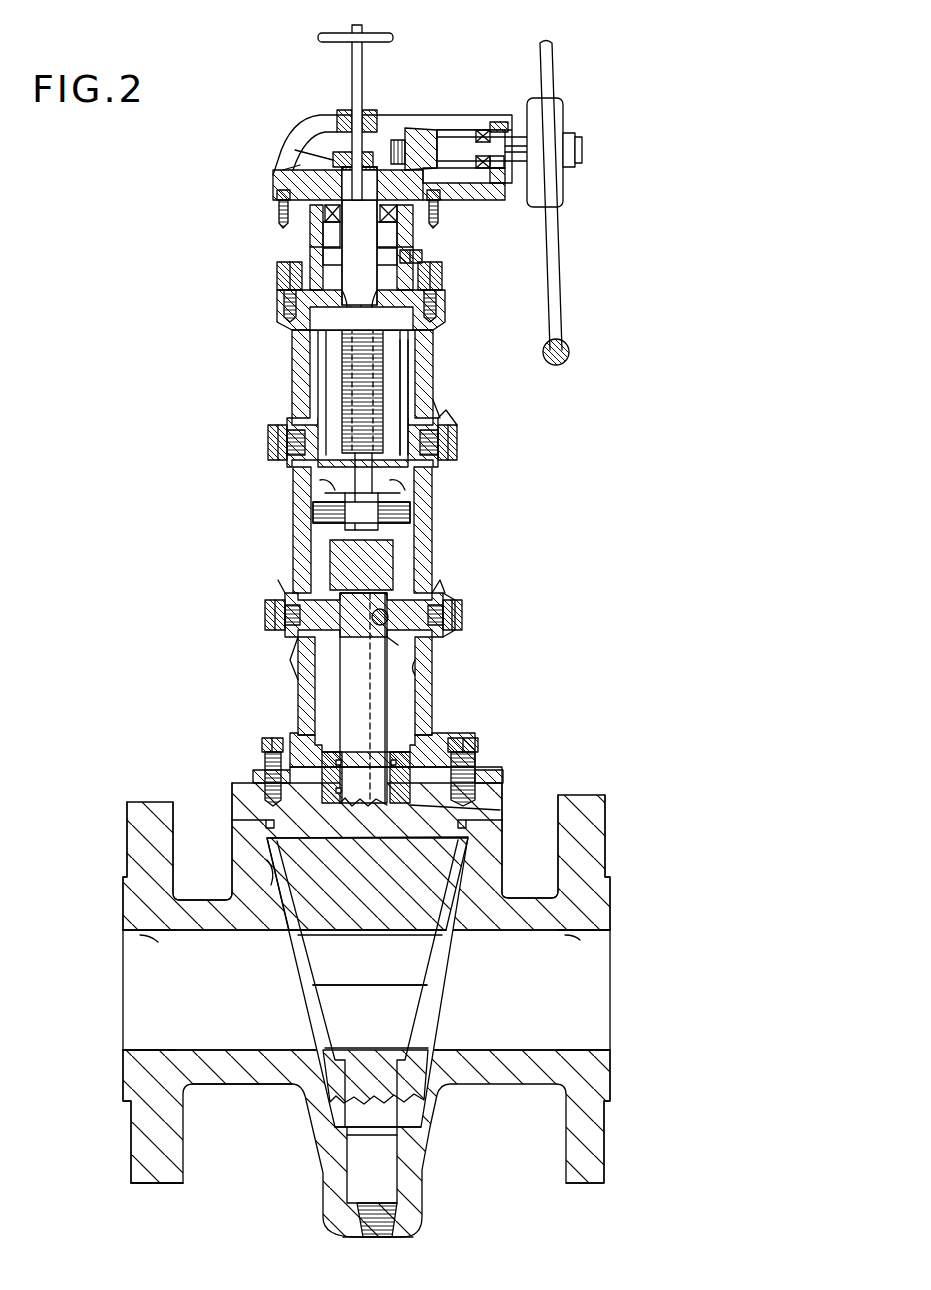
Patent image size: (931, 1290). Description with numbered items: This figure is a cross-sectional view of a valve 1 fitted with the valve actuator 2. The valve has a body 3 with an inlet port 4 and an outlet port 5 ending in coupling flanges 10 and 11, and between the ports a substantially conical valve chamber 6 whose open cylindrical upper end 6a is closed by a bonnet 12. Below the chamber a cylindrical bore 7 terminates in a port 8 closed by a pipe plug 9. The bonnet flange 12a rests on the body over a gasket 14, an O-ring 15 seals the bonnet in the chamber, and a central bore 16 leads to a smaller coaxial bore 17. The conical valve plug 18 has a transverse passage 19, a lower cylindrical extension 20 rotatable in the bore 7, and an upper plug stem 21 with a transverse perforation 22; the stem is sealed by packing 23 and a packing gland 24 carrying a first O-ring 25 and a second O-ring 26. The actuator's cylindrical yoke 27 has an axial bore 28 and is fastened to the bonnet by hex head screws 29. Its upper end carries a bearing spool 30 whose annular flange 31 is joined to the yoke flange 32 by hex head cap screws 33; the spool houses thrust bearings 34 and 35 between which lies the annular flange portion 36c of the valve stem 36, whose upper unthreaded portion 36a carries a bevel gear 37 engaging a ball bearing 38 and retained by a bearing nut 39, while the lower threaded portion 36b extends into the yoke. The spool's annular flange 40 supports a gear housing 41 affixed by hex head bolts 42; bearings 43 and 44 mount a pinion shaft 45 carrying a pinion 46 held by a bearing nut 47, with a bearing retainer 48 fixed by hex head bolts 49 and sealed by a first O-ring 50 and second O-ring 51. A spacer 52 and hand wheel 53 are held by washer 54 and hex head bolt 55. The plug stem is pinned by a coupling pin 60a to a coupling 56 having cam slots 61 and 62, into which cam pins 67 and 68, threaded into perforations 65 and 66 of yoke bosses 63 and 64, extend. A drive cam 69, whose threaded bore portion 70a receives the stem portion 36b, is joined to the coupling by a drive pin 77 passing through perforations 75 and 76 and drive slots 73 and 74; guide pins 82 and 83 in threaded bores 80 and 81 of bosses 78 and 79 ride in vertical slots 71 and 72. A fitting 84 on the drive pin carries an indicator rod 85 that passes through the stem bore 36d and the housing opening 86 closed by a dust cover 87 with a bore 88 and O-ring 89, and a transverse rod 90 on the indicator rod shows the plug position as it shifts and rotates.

The valve 1 is at (505, 868).
The valve actuator 2 is at (432, 553).
The body 3 is at (232, 1086).
The inlet port 4 is at (585, 936).
The outlet port 5 is at (140, 938).
The valve chamber 6 is at (283, 900).
The cylindrical upper end of valve chamber 6a is at (262, 870).
The cylindrical bore 7 is at (397, 1153).
The port 8 is at (385, 1225).
The pipe plug 9 is at (360, 1234).
The coupling flange 10 is at (606, 852).
The coupling flange 11 is at (125, 836).
The bonnet 12 is at (505, 808).
The bonnet flange 12a is at (232, 798).
The gasket 14 is at (266, 824).
The O-ring 15 is at (266, 834).
The central bore 16 is at (505, 790).
The second coaxial bore 17 is at (470, 831).
The valve plug 18 is at (320, 938).
The transverse passage 19 is at (330, 1010).
The cylindrical extension 20 is at (352, 1124).
The plug stem 21 is at (390, 712).
The transverse perforation 22 is at (372, 630).
The packing 23 is at (415, 812).
The packing gland 24 is at (262, 761).
The first O-ring 25 is at (340, 752).
The second O-ring 26 is at (342, 776).
The yoke 27 is at (434, 658).
The axial bore 28 is at (420, 678).
The hex head screws 29 is at (280, 738).
The bearing spool 30 is at (280, 280).
The annular flange 31 is at (285, 298).
The flange 32 is at (280, 320).
The hex head cap screws 33 is at (300, 272).
The thrust bearing 34 is at (322, 238).
The thrust bearing 35 is at (323, 258).
The valve stem 36 is at (442, 300).
The upper unthreaded portion 36a is at (415, 236).
The lower threaded portion 36b is at (385, 400).
The annular flange portion 36c is at (310, 248).
The axial bore 36d is at (300, 172).
The bevel gear 37 is at (273, 182).
The ball bearing 38 is at (278, 212).
The bearing nut 39 is at (333, 160).
The annular flange 40 is at (440, 207).
The gear housing 41 is at (333, 155).
The hex head bolts 42 is at (277, 222).
The bearing 43 is at (450, 137).
The bearing 44 is at (483, 130).
The pinion shaft 45 is at (475, 135).
The pinion 46 is at (415, 128).
The bearing nut 47 is at (398, 140).
The bearing retainer 48 is at (498, 122).
The hex head bolts 49 is at (532, 70).
The first O-ring 50 is at (505, 168).
The second O-ring 51 is at (507, 186).
The spacer 52 is at (545, 140).
The hand wheel 53 is at (570, 352).
The washer 54 is at (568, 144).
The hex head bolt 55 is at (583, 151).
The coupling 56 is at (395, 545).
The coupling pin 60a is at (370, 622).
The cam slot 61 is at (374, 612).
The cam slot 62 is at (395, 640).
The boss 63 is at (300, 592).
The boss 64 is at (438, 588).
The internally threaded perforation 65 is at (272, 600).
The internally threaded perforation 66 is at (457, 600).
The cam pin 67 is at (267, 613).
The cam pin 68 is at (462, 612).
The drive cam 69 is at (420, 318).
The upper axial bore portion 70a is at (404, 357).
The vertical slot 71 is at (320, 345).
The vertical slot 72 is at (420, 370).
The drive slot 73 is at (322, 490).
The drive slot 74 is at (398, 492).
The perforation 75 is at (333, 500).
The perforation 76 is at (410, 505).
The drive pin 77 is at (318, 513).
The boss 78 is at (293, 400).
The boss 79 is at (428, 410).
The internally threaded bore 80 is at (300, 432).
The internally threaded bore 81 is at (452, 432).
The guide pin 82 is at (270, 440).
The guide pin 83 is at (460, 440).
The fitting 84 is at (380, 512).
The indicator rod 85 is at (330, 42).
The opening 86 is at (338, 138).
The dust cover 87 is at (345, 110).
The bore 88 is at (350, 135).
The O-ring 89 is at (370, 110).
The transverse rod 90 is at (333, 35).